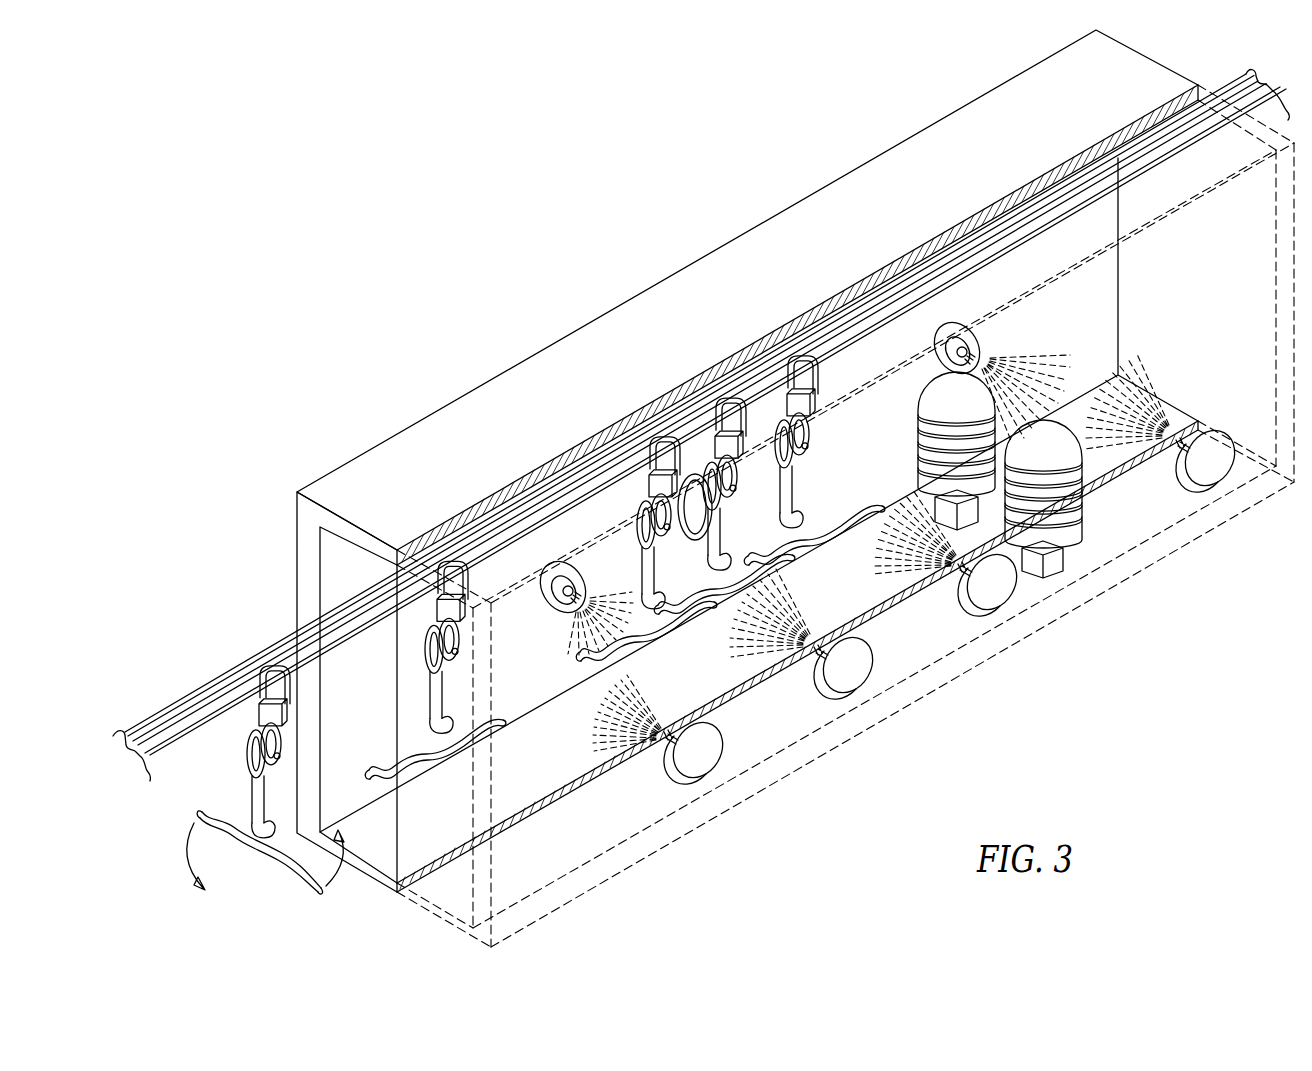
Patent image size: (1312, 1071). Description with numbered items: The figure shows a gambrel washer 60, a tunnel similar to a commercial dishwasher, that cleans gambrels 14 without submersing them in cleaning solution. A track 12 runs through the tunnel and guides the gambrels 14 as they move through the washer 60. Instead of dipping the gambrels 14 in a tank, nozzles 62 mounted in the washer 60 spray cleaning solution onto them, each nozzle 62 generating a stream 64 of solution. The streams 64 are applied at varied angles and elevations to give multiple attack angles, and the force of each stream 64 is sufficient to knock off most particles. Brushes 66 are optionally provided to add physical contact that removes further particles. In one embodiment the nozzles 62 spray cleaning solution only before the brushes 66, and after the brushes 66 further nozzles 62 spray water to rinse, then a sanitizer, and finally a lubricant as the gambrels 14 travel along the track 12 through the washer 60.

The track 12 is at (189, 730).
The gambrel 14 is at (282, 873).
The gambrel washer 60 is at (608, 318).
The nozzle 62 is at (548, 610).
The stream 64 is at (590, 738).
The brush 66 is at (918, 400).